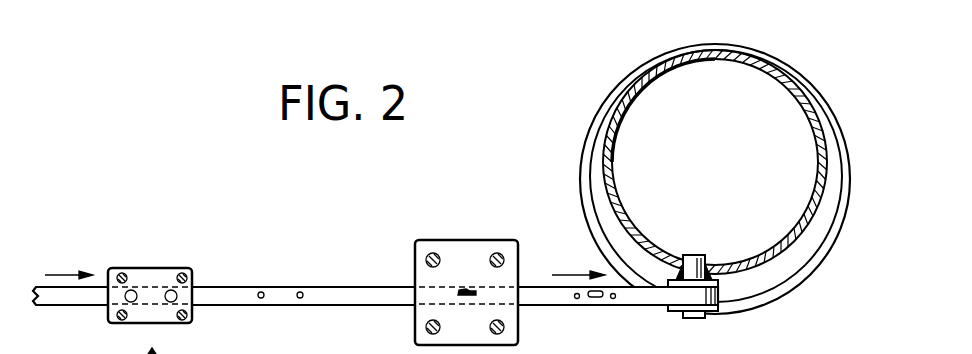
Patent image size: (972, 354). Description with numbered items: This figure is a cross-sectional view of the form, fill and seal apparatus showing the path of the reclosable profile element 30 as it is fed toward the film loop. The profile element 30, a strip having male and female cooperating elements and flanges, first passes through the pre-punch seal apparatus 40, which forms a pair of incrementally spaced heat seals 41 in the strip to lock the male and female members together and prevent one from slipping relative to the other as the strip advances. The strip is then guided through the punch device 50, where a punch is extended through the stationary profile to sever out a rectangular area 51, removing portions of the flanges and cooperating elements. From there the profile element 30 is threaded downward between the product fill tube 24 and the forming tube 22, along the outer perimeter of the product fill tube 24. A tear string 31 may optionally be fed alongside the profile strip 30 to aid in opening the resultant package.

The forming tube 22 is at (596, 119).
The product fill tube 24 is at (768, 62).
The reclosable profile element 30 is at (62, 295).
The tear string 31 is at (725, 293).
The pre-punch seal apparatus 40 is at (158, 252).
The heat seals 41 is at (300, 292).
The punch device 50 is at (466, 228).
The rectangular area 51 is at (598, 299).